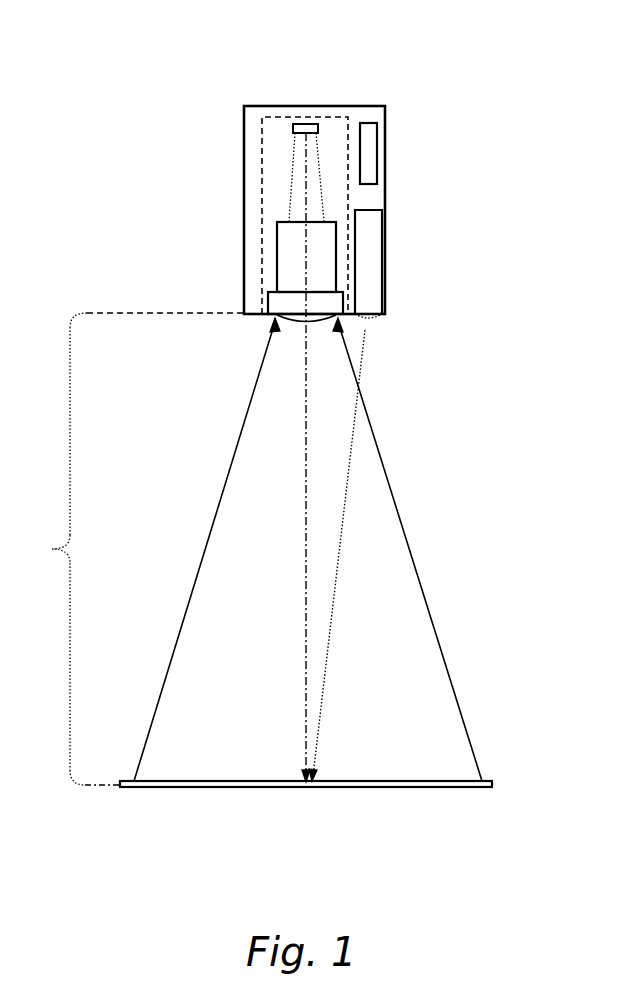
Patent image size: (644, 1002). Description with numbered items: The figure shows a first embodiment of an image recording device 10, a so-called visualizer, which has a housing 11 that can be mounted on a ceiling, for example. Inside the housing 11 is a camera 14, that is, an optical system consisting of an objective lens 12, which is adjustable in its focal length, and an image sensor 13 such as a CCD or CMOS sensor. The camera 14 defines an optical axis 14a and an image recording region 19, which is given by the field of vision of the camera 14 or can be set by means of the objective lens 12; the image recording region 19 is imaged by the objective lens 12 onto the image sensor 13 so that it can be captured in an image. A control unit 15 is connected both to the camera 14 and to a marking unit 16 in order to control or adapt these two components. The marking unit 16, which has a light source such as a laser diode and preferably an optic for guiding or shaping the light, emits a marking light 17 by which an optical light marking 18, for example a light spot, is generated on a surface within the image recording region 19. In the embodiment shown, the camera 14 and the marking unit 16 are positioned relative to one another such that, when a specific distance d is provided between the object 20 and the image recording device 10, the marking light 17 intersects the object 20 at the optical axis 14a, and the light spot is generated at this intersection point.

The image recording device 10 is at (362, 68).
The housing 11 is at (385, 197).
The objective lens 12 is at (280, 268).
The image sensor 13 is at (292, 129).
The camera 14 is at (338, 138).
The optical axis 14a is at (305, 640).
The control unit 15 is at (376, 134).
The marking unit 16 is at (366, 253).
The marking light 17 is at (360, 372).
The optical light marking 18 is at (314, 778).
The image recording region 19 is at (478, 795).
The object 20 is at (492, 778).
The distance d is at (133, 549).